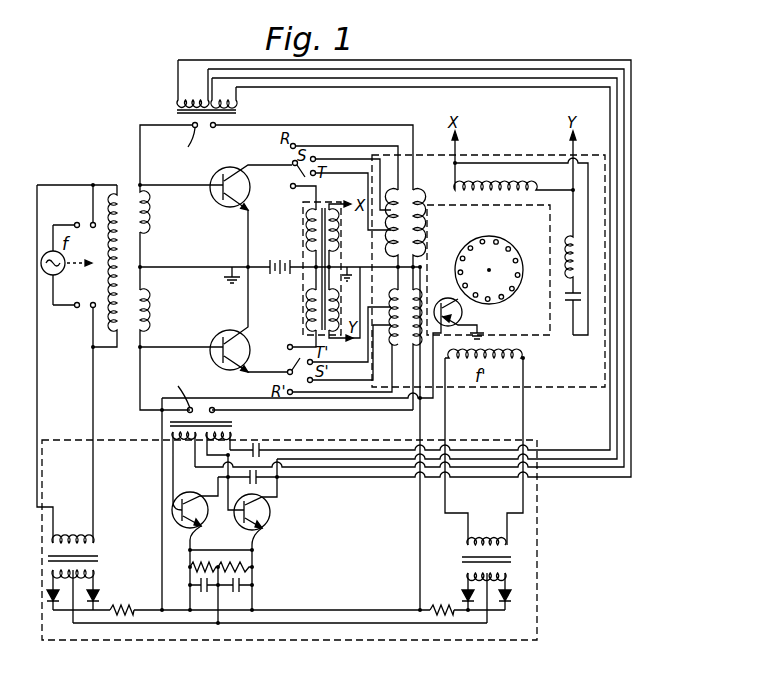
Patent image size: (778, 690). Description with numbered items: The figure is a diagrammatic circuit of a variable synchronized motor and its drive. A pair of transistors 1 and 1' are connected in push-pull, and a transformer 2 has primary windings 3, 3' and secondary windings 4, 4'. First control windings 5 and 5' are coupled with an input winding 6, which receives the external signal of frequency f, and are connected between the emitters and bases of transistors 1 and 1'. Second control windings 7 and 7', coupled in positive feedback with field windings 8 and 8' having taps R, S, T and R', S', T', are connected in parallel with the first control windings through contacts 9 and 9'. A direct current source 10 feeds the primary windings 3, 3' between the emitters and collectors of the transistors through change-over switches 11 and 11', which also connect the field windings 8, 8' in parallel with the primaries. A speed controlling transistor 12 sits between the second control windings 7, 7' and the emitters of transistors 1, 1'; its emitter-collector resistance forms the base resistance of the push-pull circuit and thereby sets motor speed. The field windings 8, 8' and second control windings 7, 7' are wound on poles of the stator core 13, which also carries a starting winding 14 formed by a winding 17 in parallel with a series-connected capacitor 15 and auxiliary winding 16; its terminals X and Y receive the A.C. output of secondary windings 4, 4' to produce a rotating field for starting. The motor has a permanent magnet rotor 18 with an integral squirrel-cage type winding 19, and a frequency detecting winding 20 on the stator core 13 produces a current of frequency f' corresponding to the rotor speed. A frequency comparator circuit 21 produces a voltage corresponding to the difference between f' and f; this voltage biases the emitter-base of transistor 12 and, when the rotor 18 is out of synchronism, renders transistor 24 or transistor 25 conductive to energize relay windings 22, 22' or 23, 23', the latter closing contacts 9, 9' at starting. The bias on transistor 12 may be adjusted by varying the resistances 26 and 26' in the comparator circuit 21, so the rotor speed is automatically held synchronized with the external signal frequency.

The transistor 1 is at (249, 216).
The transistor 1' is at (236, 319).
The transformer 2 is at (303, 214).
The primary winding 3 is at (295, 230).
The primary winding 3' is at (294, 310).
The secondary winding 4 is at (344, 230).
The secondary winding 4' is at (344, 310).
The first control winding 5 is at (157, 209).
The first control winding 5' is at (159, 318).
The input winding 6 is at (122, 193).
The second control winding 7 is at (432, 240).
The second control winding 7' is at (437, 349).
The field winding 8 is at (374, 240).
The field winding 8' is at (399, 337).
The contact 9 is at (276, 157).
The contact 9' is at (276, 380).
The direct current source 10 is at (297, 278).
The change-over switch 11 is at (289, 186).
The change-over switch 11' is at (287, 352).
The speed controlling transistor 12 is at (446, 298).
The stator core 13 is at (552, 388).
The starting winding 14 is at (562, 203).
The capacitor 15 is at (580, 306).
The auxiliary winding 16 is at (578, 252).
The winding 17 is at (458, 195).
The permanent magnet rotor 18 is at (504, 238).
The squirrel-cage type winding 19 is at (507, 297).
The frequency detecting winding 20 is at (527, 358).
The frequency comparator circuit 21 is at (528, 593).
The relay winding 22 is at (168, 83).
The relay winding 22' is at (150, 426).
The relay winding 23 is at (247, 96).
The relay winding 23' is at (247, 428).
The transistor 24 is at (176, 522).
The transistor 25 is at (270, 531).
The resistance 26 is at (120, 591).
The resistance 26' is at (438, 590).